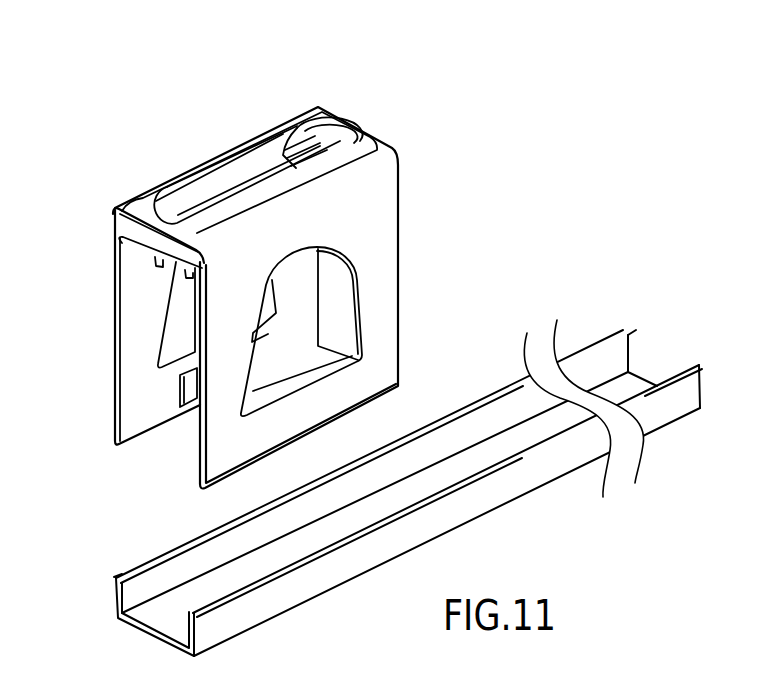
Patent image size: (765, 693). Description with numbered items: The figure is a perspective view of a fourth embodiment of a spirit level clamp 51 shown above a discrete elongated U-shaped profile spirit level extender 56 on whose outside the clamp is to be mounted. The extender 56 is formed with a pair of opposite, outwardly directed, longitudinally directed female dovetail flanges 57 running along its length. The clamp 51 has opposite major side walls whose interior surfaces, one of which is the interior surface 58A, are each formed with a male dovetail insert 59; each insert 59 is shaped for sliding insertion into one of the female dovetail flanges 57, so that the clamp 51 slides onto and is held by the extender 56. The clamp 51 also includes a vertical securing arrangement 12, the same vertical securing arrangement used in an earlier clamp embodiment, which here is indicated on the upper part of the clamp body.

The vertical securing arrangement 12 is at (385, 97).
The spirit level clamp 51 is at (543, 158).
The spirit level extender 56 is at (676, 404).
The female dovetail flanges 57 is at (217, 603).
The interior surface 58A is at (143, 308).
The male dovetail insert 59 is at (193, 408).